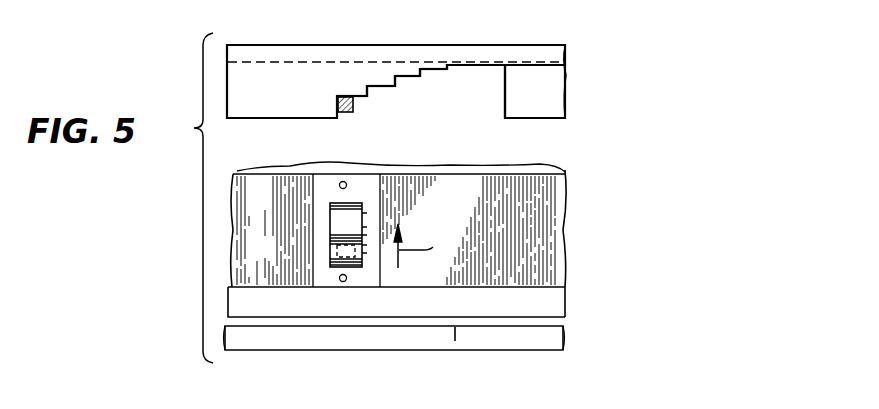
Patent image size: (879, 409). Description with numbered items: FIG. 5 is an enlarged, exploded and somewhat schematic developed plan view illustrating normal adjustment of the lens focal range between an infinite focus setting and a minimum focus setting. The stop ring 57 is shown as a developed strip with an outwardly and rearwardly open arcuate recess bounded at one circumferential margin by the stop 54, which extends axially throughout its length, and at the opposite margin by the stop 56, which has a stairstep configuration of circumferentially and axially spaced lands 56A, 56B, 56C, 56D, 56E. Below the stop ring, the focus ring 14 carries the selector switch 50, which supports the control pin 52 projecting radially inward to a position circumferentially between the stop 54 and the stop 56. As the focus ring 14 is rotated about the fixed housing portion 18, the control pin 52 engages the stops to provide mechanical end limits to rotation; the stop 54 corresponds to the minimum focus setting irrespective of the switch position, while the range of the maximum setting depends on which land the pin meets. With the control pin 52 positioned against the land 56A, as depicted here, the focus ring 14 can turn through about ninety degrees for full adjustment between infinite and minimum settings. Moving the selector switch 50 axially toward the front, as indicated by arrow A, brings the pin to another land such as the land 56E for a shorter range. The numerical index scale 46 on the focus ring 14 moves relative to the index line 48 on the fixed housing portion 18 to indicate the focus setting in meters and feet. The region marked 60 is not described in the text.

The focus ring 14 is at (566, 245).
The fixed housing portion 18 is at (362, 342).
The numerical index scale 46 is at (283, 302).
The index line 48 is at (455, 341).
The selector switch 50 is at (321, 223).
The control pin 52 is at (337, 102).
The stop 54 is at (499, 119).
The stop 56 is at (445, 120).
The land 56A is at (345, 117).
The land 56B is at (375, 91).
The land 56C is at (405, 82).
The land 56D is at (428, 71).
The land 56E is at (450, 67).
The stop ring 57 is at (277, 53).
The setting window 60 is at (380, 278).